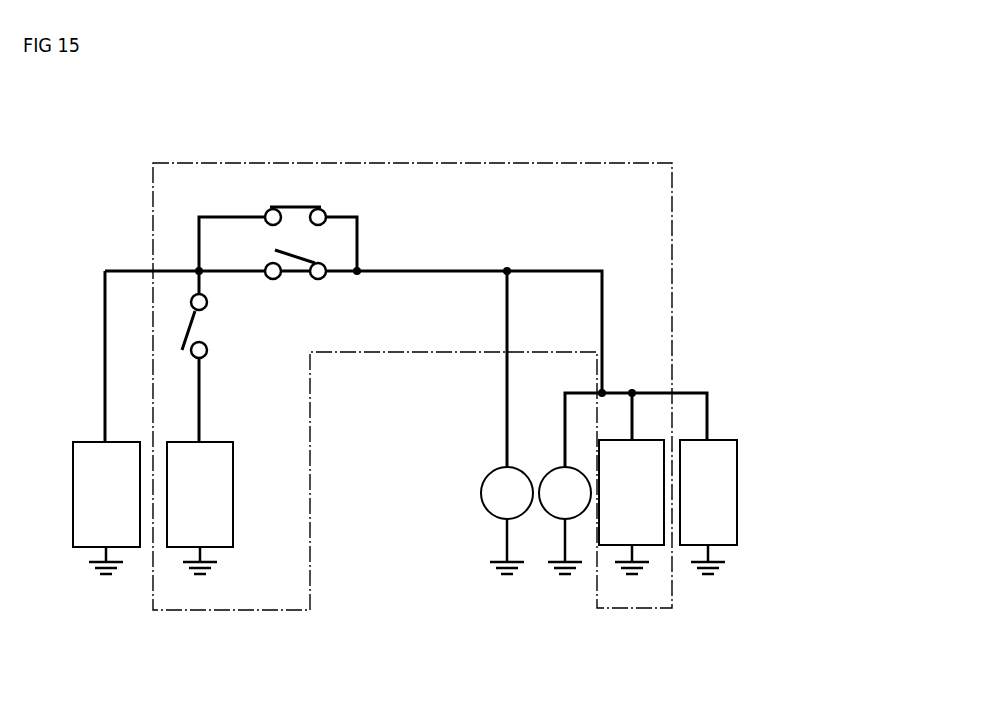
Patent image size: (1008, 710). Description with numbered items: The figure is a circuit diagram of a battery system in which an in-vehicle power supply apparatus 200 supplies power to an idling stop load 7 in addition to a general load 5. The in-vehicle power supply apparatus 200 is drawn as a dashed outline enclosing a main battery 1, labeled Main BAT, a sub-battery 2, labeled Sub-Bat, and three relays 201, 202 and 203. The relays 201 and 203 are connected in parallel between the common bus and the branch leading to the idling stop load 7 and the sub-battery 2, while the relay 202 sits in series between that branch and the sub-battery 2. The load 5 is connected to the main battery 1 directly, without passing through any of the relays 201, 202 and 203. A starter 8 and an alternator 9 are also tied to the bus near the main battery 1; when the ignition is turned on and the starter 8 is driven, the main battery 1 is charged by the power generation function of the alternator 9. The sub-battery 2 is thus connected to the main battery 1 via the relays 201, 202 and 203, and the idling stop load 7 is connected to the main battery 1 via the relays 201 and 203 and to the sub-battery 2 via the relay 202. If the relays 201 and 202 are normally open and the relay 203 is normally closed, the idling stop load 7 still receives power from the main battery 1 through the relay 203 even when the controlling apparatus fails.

The in-vehicle power supply apparatus 200 is at (522, 162).
The relay 201 is at (293, 278).
The relay 202 is at (212, 335).
The relay 203 is at (328, 203).
The main battery 1 is at (625, 438).
The sub-battery 2 is at (233, 497).
The load 5 is at (737, 533).
The idling stop load 7 is at (73, 535).
The starter 8 is at (546, 515).
The alternator 9 is at (488, 515).